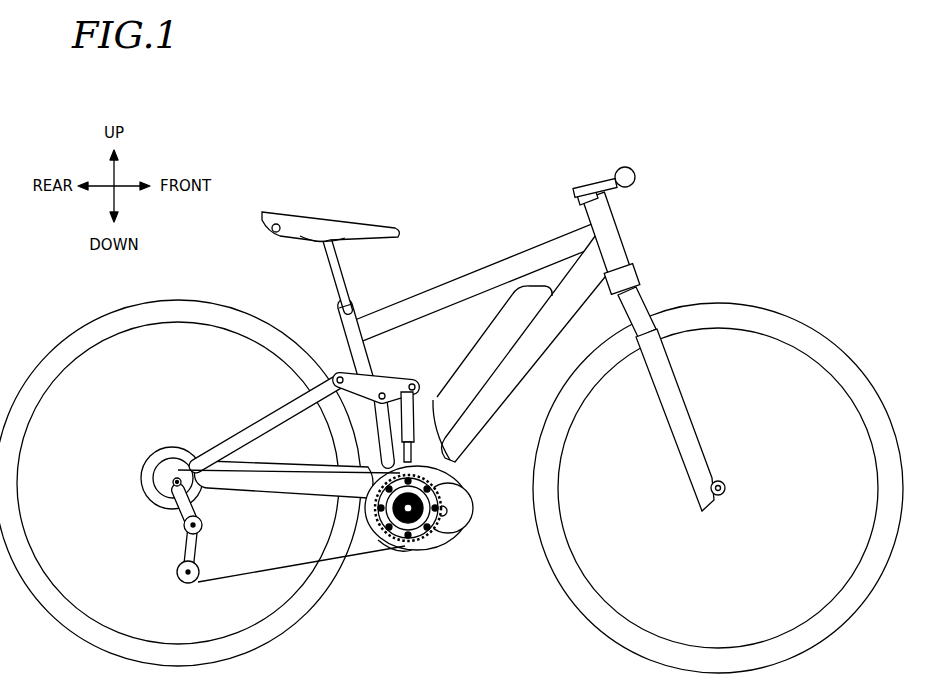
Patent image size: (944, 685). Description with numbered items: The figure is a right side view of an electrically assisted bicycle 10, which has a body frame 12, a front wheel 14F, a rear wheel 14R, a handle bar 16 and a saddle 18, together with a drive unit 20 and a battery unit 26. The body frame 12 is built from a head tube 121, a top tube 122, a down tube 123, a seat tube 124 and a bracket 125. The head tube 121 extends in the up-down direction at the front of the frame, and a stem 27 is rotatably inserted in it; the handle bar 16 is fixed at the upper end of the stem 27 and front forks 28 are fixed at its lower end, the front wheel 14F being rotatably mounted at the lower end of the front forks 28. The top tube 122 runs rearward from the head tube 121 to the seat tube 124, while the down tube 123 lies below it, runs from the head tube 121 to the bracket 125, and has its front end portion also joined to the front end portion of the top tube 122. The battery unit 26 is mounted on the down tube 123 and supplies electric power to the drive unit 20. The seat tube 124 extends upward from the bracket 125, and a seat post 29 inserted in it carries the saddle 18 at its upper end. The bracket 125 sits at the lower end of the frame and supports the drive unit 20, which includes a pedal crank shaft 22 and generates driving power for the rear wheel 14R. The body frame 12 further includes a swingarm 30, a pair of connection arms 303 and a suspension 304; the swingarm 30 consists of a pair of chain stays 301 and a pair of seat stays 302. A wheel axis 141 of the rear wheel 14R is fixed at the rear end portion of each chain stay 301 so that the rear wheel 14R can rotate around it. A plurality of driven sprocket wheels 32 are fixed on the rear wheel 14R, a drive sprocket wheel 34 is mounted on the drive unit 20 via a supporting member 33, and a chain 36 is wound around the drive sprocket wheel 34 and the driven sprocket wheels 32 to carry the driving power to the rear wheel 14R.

The electrically assisted bicycle 10 is at (693, 172).
The body frame 12 is at (505, 327).
The rear wheel 14R is at (175, 300).
The front wheel 14F is at (876, 380).
The handle bar 16 is at (631, 170).
The saddle 18 is at (322, 212).
The drive unit 20 is at (439, 523).
The pedal crank shaft 22 is at (428, 553).
The battery unit 26 is at (482, 347).
The stem 27 is at (603, 200).
The front forks 28 is at (698, 440).
The seat post 29 is at (350, 263).
The swingarm 30 is at (284, 453).
The driven sprocket wheels 32 is at (141, 478).
The supporting member 33 is at (472, 486).
The drive sprocket wheel 34 is at (393, 553).
The chain 36 is at (362, 565).
The head tube 121 is at (622, 240).
The top tube 122 is at (481, 269).
The down tube 123 is at (494, 398).
The seat tube 124 is at (372, 344).
The bracket 125 is at (421, 445).
The wheel axis 141 is at (174, 474).
The chain stays 301 is at (247, 498).
The seat stays 302 is at (226, 437).
The connection arms 303 is at (340, 375).
The suspension 304 is at (418, 410).